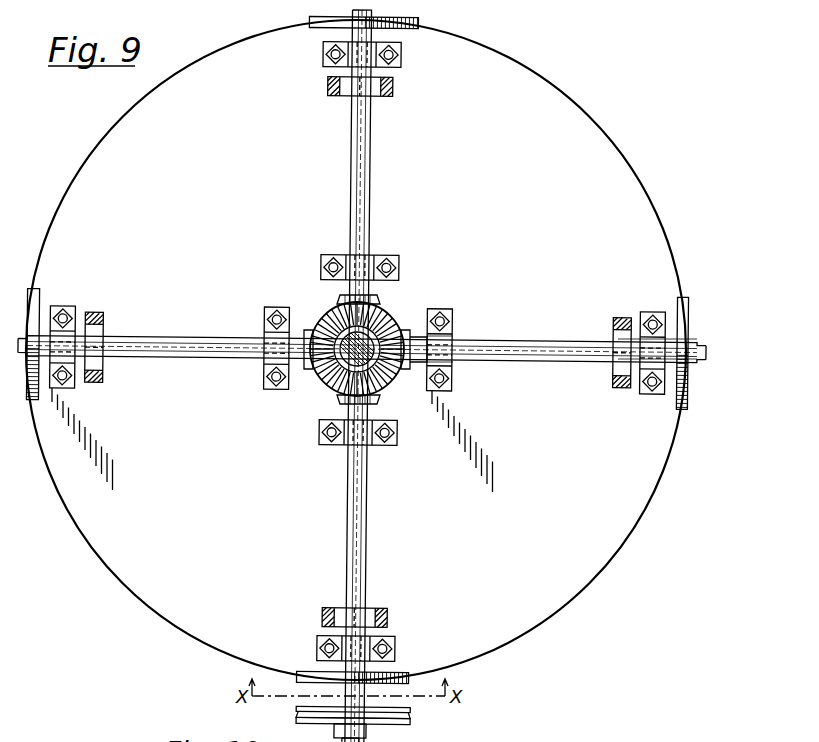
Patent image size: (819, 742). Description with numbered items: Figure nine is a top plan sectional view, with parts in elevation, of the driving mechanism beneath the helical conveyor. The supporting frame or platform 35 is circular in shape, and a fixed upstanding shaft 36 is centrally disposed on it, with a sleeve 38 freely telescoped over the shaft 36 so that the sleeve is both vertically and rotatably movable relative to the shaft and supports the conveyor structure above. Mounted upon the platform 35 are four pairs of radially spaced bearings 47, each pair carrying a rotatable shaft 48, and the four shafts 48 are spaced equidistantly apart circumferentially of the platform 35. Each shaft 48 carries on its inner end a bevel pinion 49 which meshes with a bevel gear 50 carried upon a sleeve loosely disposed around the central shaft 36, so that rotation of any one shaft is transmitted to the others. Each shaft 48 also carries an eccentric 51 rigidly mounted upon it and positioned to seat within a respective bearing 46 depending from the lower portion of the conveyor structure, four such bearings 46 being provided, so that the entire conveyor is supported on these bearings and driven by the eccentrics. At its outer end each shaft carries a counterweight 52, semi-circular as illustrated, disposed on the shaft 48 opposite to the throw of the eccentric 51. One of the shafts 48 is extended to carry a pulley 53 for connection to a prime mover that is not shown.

The supporting frame or platform 35 is at (598, 530).
The fixed upstanding shaft 36 is at (318, 376).
The sleeve 38 is at (387, 378).
The bearings 46 is at (393, 92).
The radially spaced bearings 47 is at (455, 333).
The rotatable shaft 48 is at (362, 178).
The bevel pinion 49 is at (428, 330).
The bevel gear 50 is at (400, 330).
The eccentric 51 is at (618, 355).
The counterweight 52 is at (683, 330).
The pulley 53 is at (395, 725).